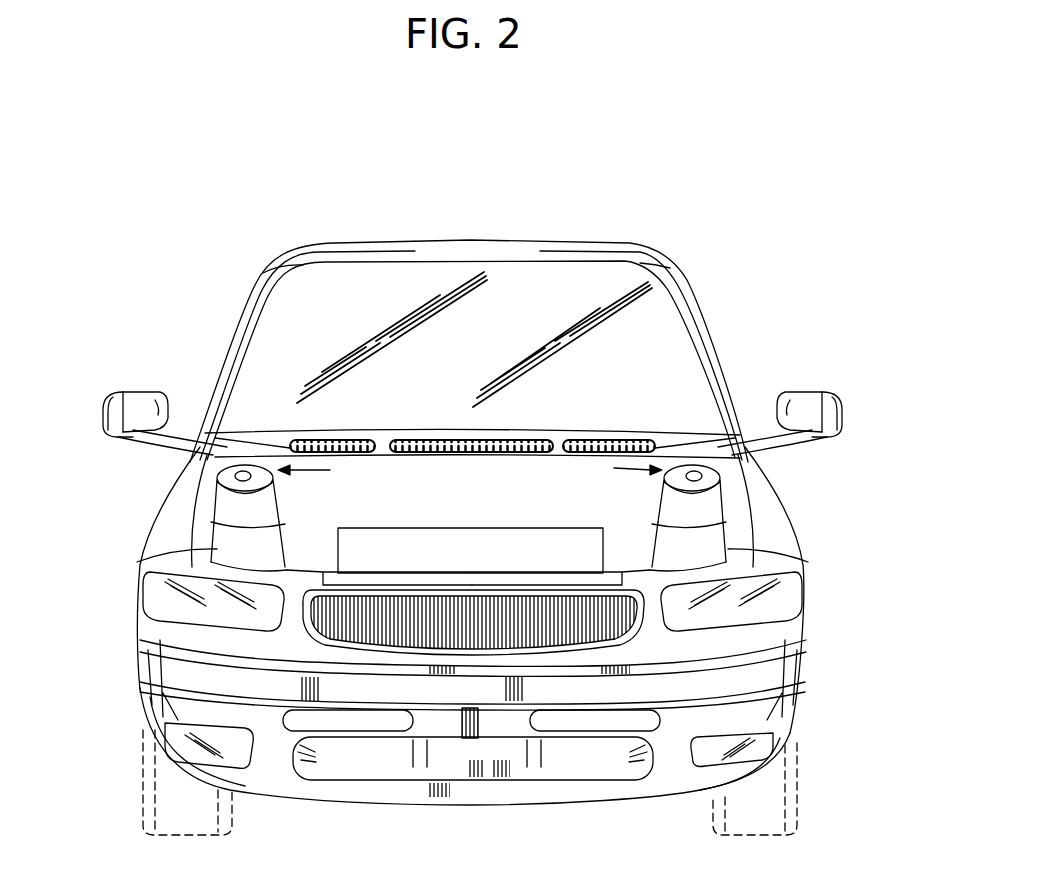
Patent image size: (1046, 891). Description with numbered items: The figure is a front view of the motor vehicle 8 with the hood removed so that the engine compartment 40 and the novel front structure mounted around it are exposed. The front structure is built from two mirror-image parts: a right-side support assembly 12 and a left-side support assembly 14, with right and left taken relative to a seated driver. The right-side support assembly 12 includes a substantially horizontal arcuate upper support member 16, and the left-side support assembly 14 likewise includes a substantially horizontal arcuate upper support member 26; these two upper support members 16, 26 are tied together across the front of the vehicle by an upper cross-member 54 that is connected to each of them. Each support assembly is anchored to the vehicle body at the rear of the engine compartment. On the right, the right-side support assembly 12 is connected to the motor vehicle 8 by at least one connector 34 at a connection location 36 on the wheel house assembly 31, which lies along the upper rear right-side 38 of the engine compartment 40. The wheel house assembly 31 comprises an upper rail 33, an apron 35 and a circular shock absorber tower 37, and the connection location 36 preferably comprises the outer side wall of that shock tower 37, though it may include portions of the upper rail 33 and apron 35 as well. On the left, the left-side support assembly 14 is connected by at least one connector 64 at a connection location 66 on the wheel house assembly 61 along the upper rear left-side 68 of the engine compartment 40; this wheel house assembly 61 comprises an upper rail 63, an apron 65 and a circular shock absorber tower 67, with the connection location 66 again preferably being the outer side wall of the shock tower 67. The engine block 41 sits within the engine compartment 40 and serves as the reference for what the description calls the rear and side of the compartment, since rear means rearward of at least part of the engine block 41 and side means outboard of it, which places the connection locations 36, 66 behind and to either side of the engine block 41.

The motor vehicle 8 is at (700, 230).
The right-side support assembly 12 is at (303, 560).
The left-side support assembly 14 is at (632, 560).
The upper support member 16 is at (200, 527).
The upper support member 26 is at (743, 528).
The wheel house assembly 31 is at (227, 450).
The upper rail 33 is at (195, 462).
The connector 34 is at (205, 483).
The apron 35 is at (227, 545).
The connection location 36 is at (207, 470).
The shock absorber tower 37 is at (252, 510).
The upper rear right-side of the engine compartment 38 is at (321, 466).
The engine compartment 40 is at (481, 490).
The engine block 41 is at (486, 564).
The upper cross-member 54 is at (540, 587).
The wheel house assembly 61 is at (718, 450).
The upper rail 63 is at (752, 462).
The connector 64 is at (748, 484).
The apron 65 is at (715, 545).
The connection location 66 is at (738, 470).
The shock absorber tower 67 is at (684, 505).
The upper rear left-side of the engine compartment 68 is at (624, 466).